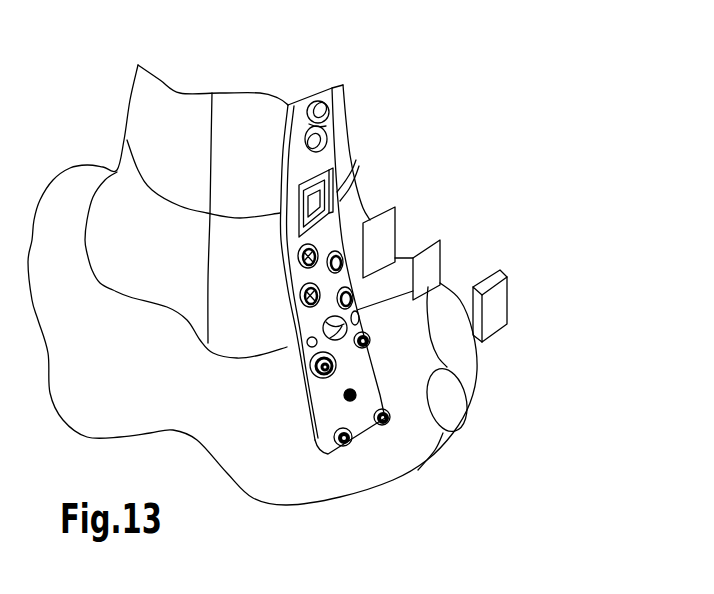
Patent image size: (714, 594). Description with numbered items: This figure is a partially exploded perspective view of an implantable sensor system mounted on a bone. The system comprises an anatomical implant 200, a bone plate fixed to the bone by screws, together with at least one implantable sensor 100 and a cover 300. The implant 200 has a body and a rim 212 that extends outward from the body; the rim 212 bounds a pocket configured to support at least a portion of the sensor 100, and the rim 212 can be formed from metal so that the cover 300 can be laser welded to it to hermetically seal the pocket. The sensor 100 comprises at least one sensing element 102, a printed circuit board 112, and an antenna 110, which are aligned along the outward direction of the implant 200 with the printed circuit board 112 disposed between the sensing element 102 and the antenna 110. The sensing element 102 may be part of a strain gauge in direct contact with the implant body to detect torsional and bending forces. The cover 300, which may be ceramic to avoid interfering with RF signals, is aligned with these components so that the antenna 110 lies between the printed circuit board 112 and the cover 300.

The implantable sensor 100 is at (462, 143).
The anatomical implant 200 is at (288, 112).
The rim 212 is at (320, 198).
The sensing element 102 is at (313, 202).
The printed circuit board 112 is at (388, 223).
The antenna 110 is at (418, 277).
The cover 300 is at (487, 323).